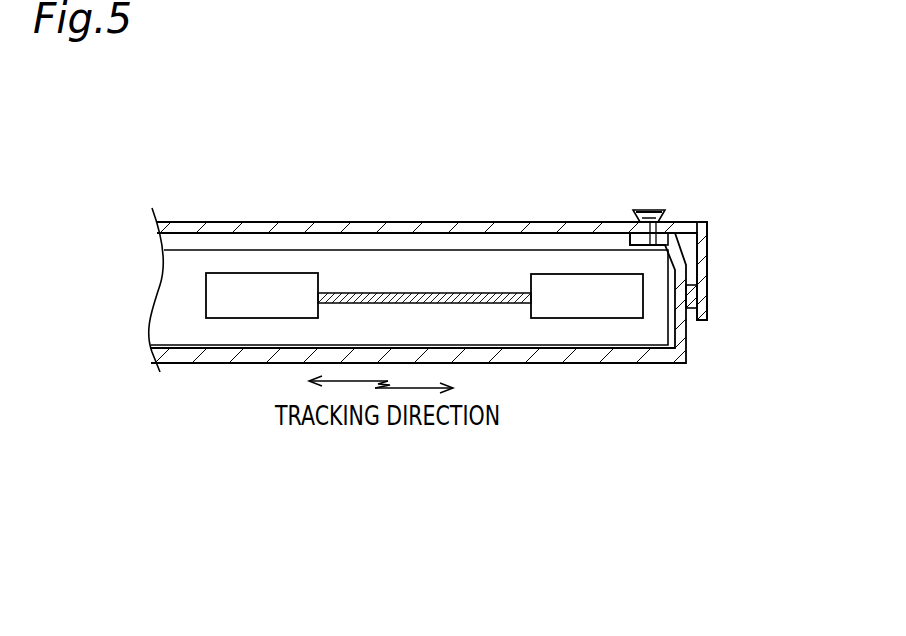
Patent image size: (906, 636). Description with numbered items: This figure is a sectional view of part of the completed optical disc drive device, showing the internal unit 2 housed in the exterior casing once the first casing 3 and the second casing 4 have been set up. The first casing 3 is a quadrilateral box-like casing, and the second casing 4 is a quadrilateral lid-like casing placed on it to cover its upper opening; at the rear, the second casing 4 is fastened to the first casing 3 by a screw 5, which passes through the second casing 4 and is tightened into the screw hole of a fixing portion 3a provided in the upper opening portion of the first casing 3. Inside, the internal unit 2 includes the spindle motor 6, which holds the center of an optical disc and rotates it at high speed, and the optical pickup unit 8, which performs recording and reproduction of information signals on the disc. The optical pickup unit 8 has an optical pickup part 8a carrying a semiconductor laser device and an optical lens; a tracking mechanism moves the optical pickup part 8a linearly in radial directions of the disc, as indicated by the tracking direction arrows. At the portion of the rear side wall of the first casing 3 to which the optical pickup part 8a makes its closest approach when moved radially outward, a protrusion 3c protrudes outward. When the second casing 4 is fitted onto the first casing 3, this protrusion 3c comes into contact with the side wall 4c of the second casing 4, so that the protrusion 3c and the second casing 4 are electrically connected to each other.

The internal unit 2 is at (178, 290).
The first casing 3 is at (618, 352).
The fixing portion 3a is at (665, 238).
The protrusion 3c is at (702, 298).
The second casing 4 is at (328, 230).
The side wall 4c is at (705, 260).
The screw 5 is at (656, 212).
The spindle motor 6 is at (260, 290).
The optical pickup unit 8 is at (560, 318).
The optical pickup part 8a is at (538, 292).